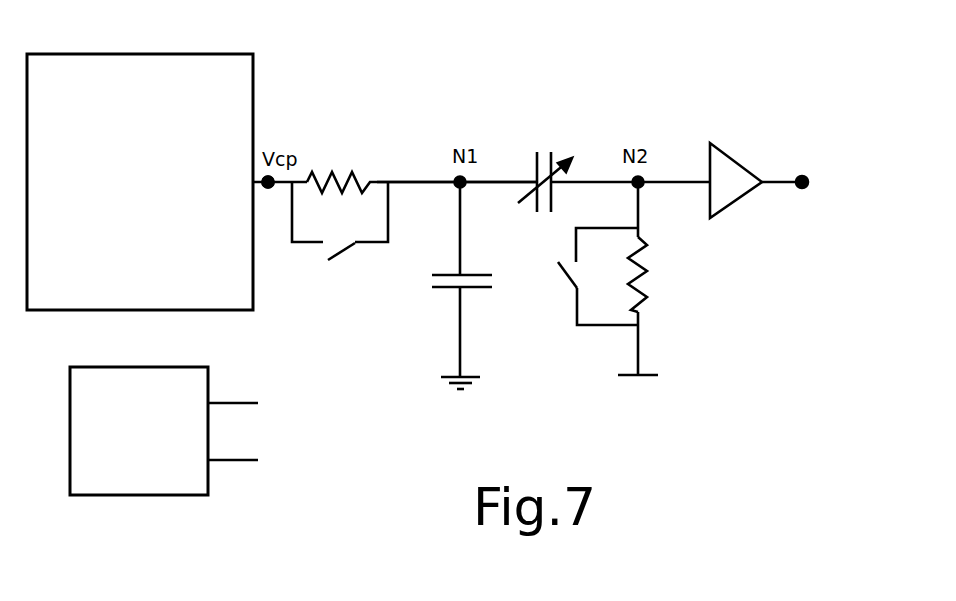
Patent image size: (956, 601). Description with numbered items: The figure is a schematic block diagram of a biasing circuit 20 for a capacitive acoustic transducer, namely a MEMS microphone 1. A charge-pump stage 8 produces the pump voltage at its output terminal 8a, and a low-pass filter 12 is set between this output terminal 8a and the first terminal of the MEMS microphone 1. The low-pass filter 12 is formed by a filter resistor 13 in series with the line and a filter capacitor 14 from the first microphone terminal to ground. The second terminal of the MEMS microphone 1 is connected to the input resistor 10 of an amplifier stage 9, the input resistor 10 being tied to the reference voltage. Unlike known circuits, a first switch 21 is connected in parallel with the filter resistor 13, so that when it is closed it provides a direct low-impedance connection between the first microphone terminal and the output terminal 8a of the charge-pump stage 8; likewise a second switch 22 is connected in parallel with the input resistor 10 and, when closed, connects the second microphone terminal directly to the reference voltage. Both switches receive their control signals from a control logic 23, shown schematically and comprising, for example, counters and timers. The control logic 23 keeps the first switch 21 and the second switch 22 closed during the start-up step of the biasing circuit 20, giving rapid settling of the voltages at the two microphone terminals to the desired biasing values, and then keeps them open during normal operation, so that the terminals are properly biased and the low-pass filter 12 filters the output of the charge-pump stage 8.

The MEMS microphone 1 is at (546, 150).
The charge-pump stage 8 is at (222, 292).
The output terminal of the charge-pump stage 8a is at (270, 186).
The amplifier stage 9 is at (733, 173).
The input resistor 10 is at (645, 296).
The low-pass filter 12 is at (429, 147).
The filter resistor 13 is at (357, 175).
The filter capacitor 14 is at (449, 289).
The biasing circuit 20 is at (730, 96).
The first switch 21 is at (329, 262).
The second switch 22 is at (563, 277).
The control logic 23 is at (186, 472).